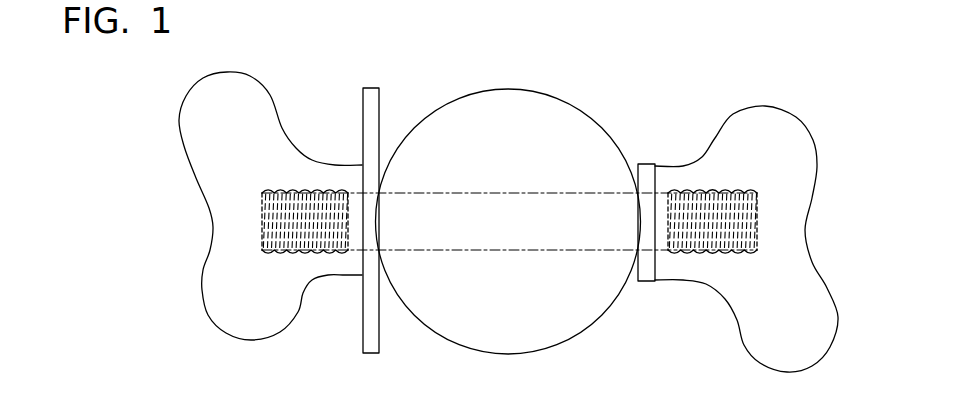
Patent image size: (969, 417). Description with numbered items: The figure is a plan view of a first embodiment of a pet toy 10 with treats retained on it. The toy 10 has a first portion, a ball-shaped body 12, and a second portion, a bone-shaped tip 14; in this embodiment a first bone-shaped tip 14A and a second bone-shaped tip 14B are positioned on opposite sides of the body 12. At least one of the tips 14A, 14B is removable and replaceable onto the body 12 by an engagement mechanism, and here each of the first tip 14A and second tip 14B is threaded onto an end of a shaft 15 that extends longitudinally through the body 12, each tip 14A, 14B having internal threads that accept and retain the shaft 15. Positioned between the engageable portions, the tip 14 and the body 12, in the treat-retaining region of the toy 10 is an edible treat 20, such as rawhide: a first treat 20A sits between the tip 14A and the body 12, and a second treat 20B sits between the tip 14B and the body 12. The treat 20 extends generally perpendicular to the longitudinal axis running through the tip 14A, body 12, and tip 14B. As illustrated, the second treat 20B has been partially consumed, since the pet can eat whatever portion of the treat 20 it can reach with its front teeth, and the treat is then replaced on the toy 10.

The toy 10 is at (607, 60).
The body 12 is at (457, 98).
The tip 14 is at (248, 77).
The first bone-shaped tip 14A is at (180, 122).
The second bone-shaped tip 14B is at (813, 142).
The shaft 15 is at (578, 193).
The edible treat 20 is at (372, 88).
The first treat 20A is at (370, 355).
The second treat 20B is at (645, 282).